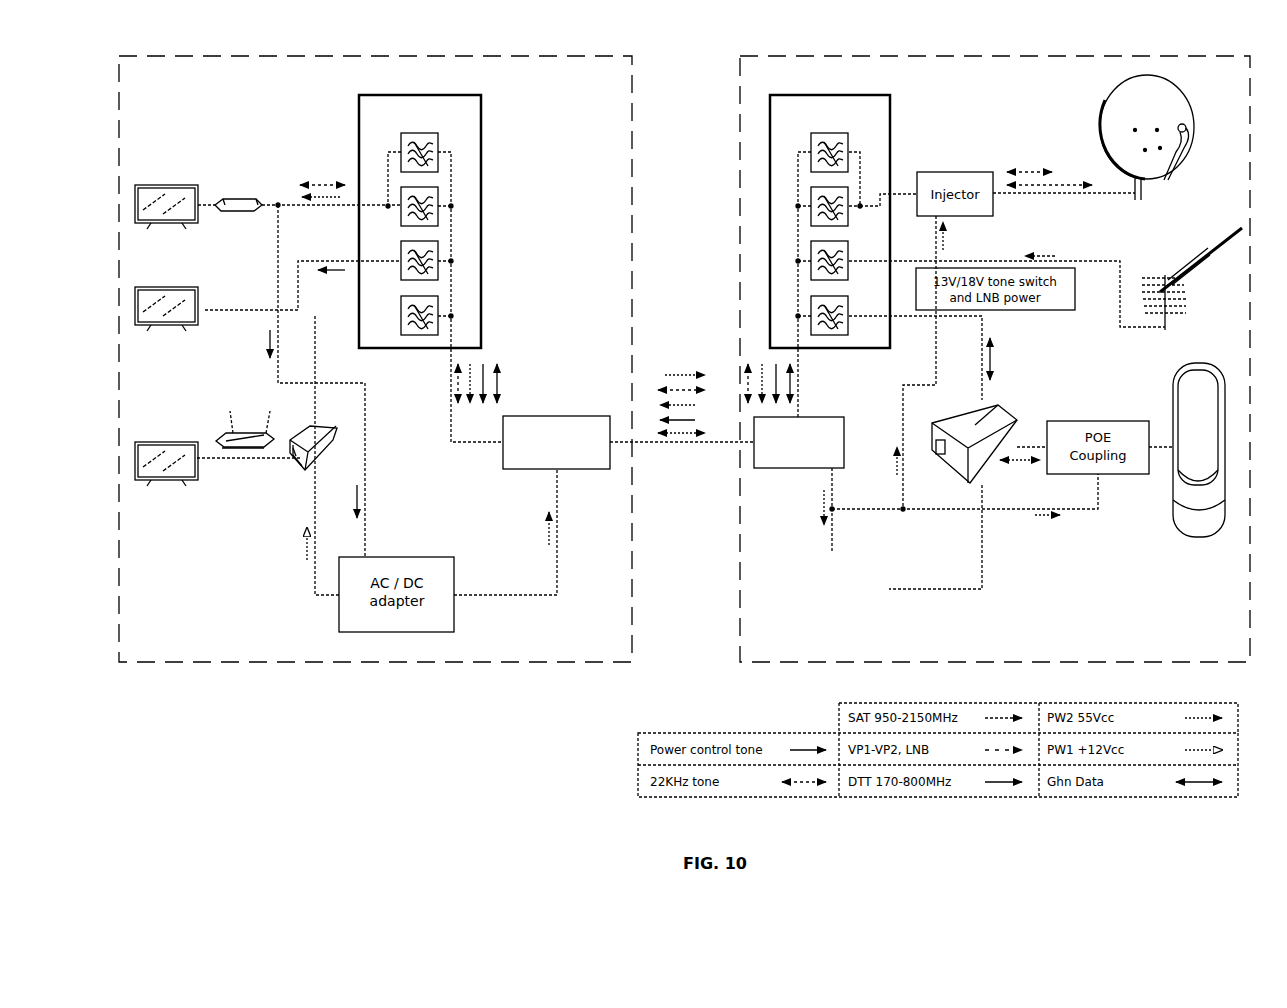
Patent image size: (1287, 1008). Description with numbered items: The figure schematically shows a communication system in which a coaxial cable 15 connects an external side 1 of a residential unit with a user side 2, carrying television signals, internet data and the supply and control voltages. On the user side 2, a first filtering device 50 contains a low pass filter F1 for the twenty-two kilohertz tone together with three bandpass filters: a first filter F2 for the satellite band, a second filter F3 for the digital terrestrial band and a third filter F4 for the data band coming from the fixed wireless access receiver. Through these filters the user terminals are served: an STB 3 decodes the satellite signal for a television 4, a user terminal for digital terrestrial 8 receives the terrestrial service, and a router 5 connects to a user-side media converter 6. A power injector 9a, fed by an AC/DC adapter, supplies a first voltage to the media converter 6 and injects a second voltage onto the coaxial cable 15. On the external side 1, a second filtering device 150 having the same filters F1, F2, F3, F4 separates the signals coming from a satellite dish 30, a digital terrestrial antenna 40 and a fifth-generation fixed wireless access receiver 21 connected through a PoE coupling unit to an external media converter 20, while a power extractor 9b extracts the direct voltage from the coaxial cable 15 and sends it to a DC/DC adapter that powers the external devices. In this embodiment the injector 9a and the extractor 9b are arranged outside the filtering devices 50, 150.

The external side 1 is at (766, 662).
The user side 2 is at (170, 662).
The STB (Set Top Box) 3 is at (237, 198).
The television 4 is at (150, 185).
The router 5 is at (216, 434).
The media converter 6 is at (337, 428).
The user terminal for digital terrestrial 8 is at (178, 333).
The power injector 9a is at (570, 455).
The power extractor 9b is at (813, 455).
The coaxial cable 15 is at (695, 443).
The media converter 20 is at (993, 405).
The 5G FWA receiver 21 is at (1193, 513).
The satellite dish 30 is at (1102, 89).
The digital terrestrial antenna 40 is at (1205, 260).
The first filtering device 50 is at (469, 123).
The second filtering device 150 is at (810, 123).
The low pass filter F1 is at (420, 133).
The first filter F2 is at (438, 193).
The second filter F3 is at (438, 248).
The third filter F4 is at (438, 303).